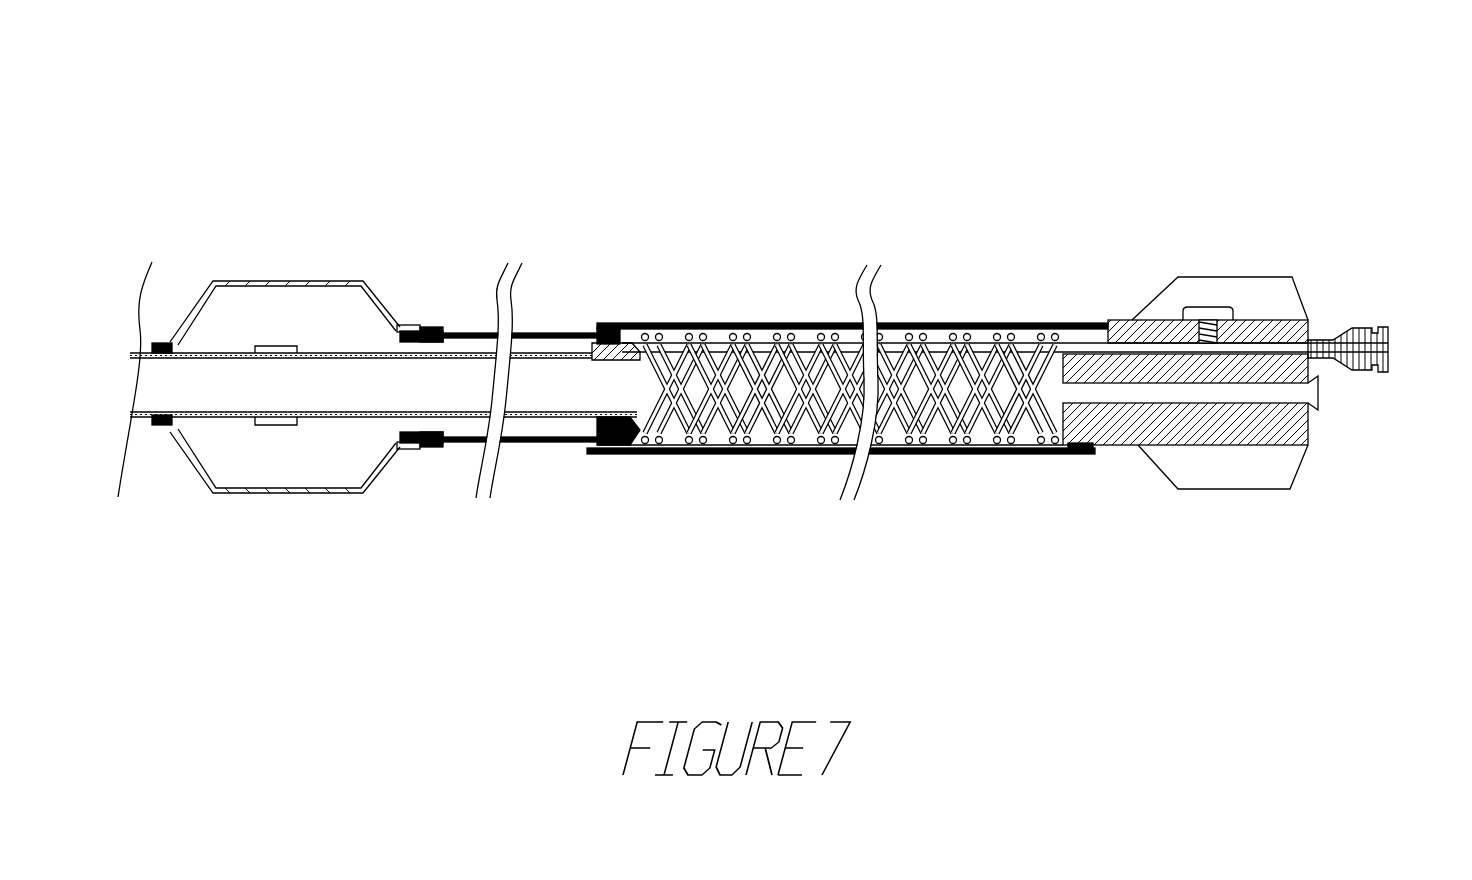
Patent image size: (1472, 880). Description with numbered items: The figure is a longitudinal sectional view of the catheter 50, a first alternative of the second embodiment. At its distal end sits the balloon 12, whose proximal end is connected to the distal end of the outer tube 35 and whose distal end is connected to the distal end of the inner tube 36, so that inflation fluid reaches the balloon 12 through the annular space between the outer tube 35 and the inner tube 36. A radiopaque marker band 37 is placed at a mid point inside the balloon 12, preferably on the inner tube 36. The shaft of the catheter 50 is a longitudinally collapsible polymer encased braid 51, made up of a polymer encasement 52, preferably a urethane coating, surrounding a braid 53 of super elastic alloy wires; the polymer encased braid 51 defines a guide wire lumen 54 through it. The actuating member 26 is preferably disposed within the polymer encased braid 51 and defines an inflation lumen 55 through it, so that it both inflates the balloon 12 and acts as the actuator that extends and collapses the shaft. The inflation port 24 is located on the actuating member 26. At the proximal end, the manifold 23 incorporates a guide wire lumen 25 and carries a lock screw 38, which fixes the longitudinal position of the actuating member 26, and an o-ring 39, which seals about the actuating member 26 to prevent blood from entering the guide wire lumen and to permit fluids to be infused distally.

The balloon 12 is at (295, 192).
The catheter 50 is at (868, 113).
The outer tube 35 is at (470, 333).
The inflation lumen 55 is at (547, 337).
The actuating member 26 is at (683, 333).
The o-ring 39 is at (1150, 335).
The lock screw 38 is at (1208, 307).
The inflation port 24 is at (1358, 333).
The guide wire lumen 54 is at (208, 407).
The radiopaque marker band 37 is at (278, 420).
The inner tube 36 is at (468, 418).
The polymer encased braid 51 is at (915, 500).
The polymer encasement 52 is at (963, 452).
The braid 53 is at (1013, 452).
The manifold 23 is at (1247, 573).
The guide wire lumen 25 is at (1316, 400).